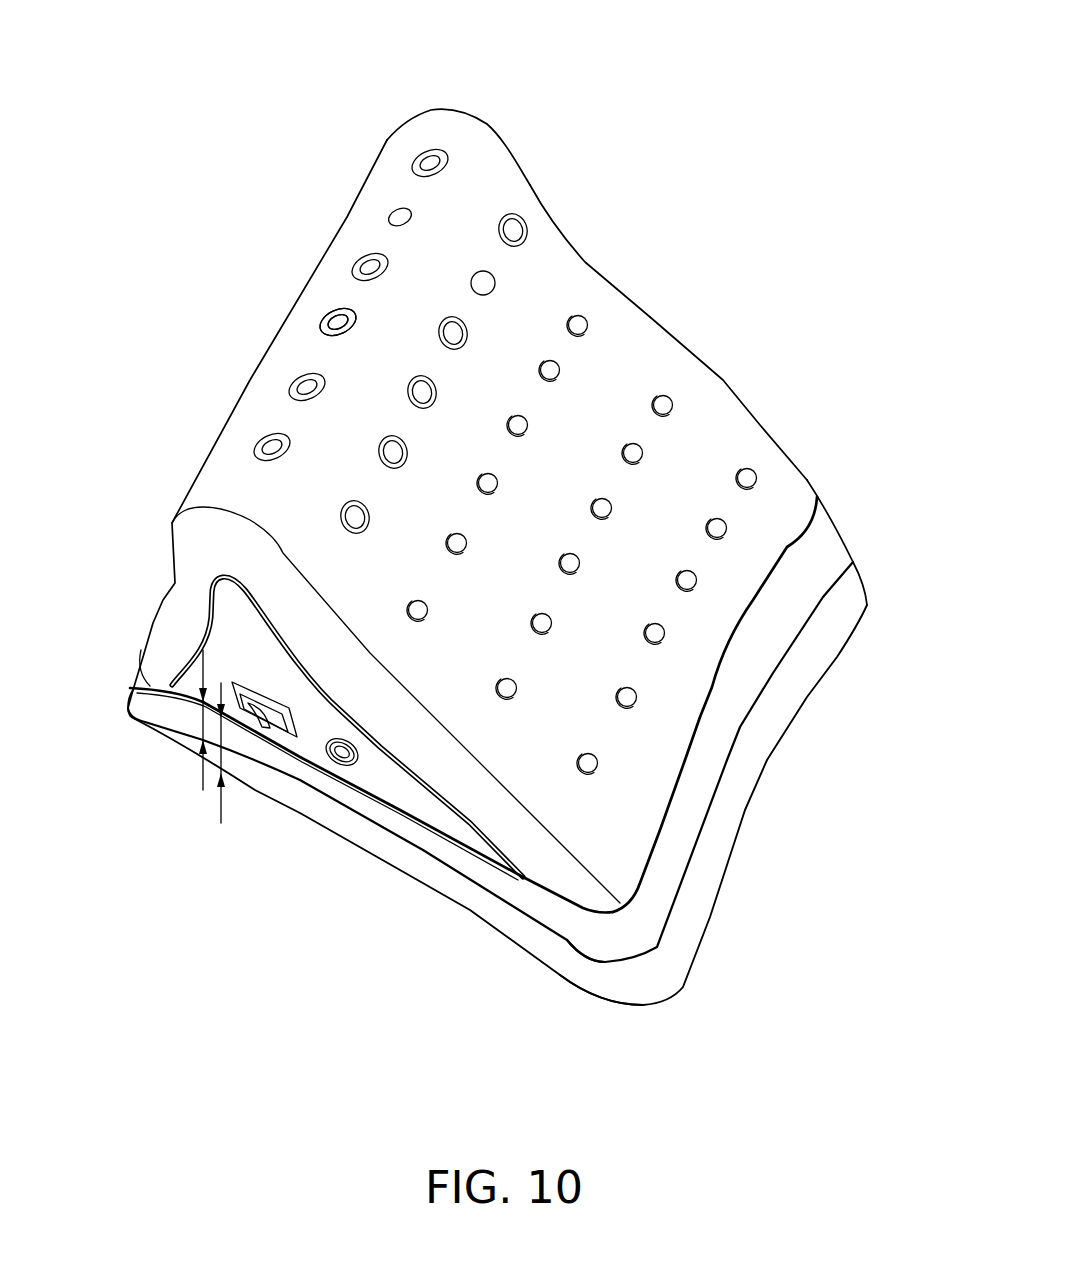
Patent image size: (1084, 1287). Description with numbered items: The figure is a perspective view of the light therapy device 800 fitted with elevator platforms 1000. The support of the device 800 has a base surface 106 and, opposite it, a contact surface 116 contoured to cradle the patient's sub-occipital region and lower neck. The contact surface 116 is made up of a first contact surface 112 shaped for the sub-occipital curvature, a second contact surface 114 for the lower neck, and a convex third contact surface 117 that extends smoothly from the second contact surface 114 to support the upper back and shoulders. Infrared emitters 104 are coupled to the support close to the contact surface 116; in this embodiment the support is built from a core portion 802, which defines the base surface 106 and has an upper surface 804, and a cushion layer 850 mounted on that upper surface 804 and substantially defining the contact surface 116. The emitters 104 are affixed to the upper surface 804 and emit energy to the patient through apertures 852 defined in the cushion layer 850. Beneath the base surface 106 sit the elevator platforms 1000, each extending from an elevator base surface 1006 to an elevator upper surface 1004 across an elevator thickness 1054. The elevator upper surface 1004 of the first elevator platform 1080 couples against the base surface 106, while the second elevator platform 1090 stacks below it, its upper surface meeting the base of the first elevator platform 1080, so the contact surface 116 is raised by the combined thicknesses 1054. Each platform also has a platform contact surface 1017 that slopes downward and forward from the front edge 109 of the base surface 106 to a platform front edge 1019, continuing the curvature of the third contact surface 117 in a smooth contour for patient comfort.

The device 800 is at (684, 149).
The first contact surface 112 is at (444, 126).
The contact surface 116 is at (547, 265).
The second contact surface 114 is at (637, 350).
The platform contact surface 1017 is at (820, 560).
The third contact surface 117 is at (800, 490).
The base surface 106 is at (455, 852).
The front edge 109 is at (700, 717).
The elevator upper surface 1004 is at (424, 835).
The platform front edge 1019 is at (775, 673).
The second elevator platform 1090 is at (318, 821).
The elevator base surface 1006 is at (582, 958).
The first elevator platform 1080 is at (293, 776).
The elevator platforms 1000 is at (131, 704).
The upper surface 804 is at (402, 780).
The core portion 802 is at (190, 682).
The cushion layer 850 is at (193, 545).
The elevator thickness 1054 is at (185, 715).
The infrared emitters 104 is at (337, 310).
The apertures 852 is at (310, 316).